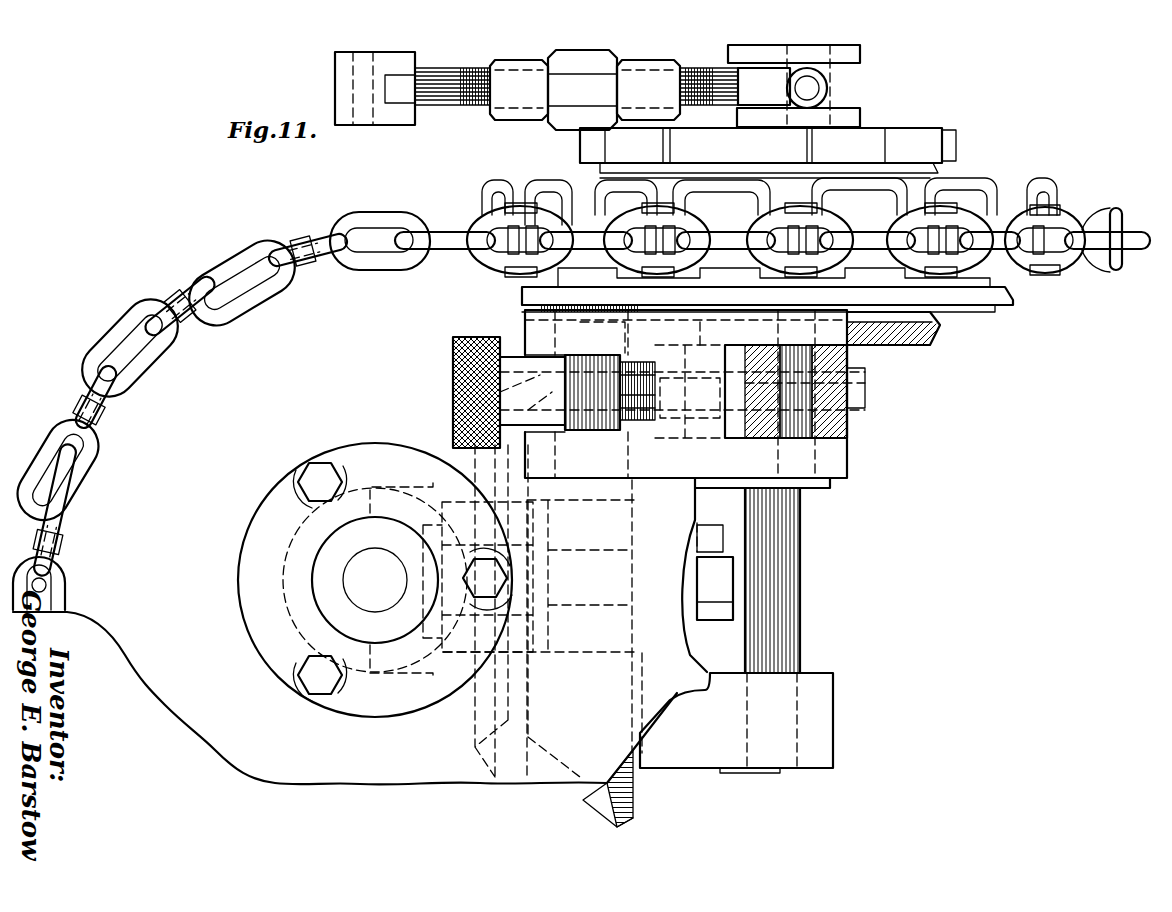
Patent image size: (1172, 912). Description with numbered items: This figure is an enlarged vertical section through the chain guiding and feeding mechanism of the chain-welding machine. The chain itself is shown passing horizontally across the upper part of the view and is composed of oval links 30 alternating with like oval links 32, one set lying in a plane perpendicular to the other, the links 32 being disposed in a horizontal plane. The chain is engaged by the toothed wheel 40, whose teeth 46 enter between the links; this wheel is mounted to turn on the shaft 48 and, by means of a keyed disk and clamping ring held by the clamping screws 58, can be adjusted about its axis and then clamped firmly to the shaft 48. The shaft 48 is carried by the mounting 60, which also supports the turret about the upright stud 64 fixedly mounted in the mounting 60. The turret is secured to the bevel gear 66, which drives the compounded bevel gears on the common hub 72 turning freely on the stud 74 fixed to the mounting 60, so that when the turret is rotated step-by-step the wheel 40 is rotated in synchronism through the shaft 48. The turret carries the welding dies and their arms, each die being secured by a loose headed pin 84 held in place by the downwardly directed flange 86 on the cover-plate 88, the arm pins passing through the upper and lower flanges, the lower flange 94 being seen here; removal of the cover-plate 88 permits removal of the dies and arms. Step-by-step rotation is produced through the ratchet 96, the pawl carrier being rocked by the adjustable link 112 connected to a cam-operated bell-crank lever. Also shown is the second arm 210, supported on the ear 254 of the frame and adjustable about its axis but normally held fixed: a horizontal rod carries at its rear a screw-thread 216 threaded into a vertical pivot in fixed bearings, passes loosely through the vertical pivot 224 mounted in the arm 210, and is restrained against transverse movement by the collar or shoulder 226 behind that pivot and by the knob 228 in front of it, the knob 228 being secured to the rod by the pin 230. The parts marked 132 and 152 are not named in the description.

The oval links 30 is at (318, 258).
The oval links 32 is at (380, 214).
The wheel 40 is at (172, 688).
The teeth 46 is at (306, 242).
The shaft 48 is at (376, 556).
The clamping screws 58 is at (312, 480).
The mounting 60 is at (835, 714).
The upright stud 64 is at (790, 590).
The bevel gear 66 is at (938, 324).
The common hub 72 is at (458, 507).
The stud 74 is at (574, 550).
The headed pin 84 is at (571, 210).
The flange 86 is at (486, 190).
The cover-plate 88 is at (997, 178).
The lower flange 94 is at (962, 306).
The ratchet 96 is at (905, 133).
The link 112 is at (474, 94).
The support bar 132 is at (1012, 293).
The roller ring 152 is at (505, 248).
The second arm 210 is at (540, 326).
The screw-thread 216 is at (866, 392).
The vertical pivot 224 is at (612, 413).
The collar or shoulder 226 is at (655, 405).
The knob 228 is at (480, 337).
The pin 230 is at (540, 395).
The ear 254 is at (848, 428).